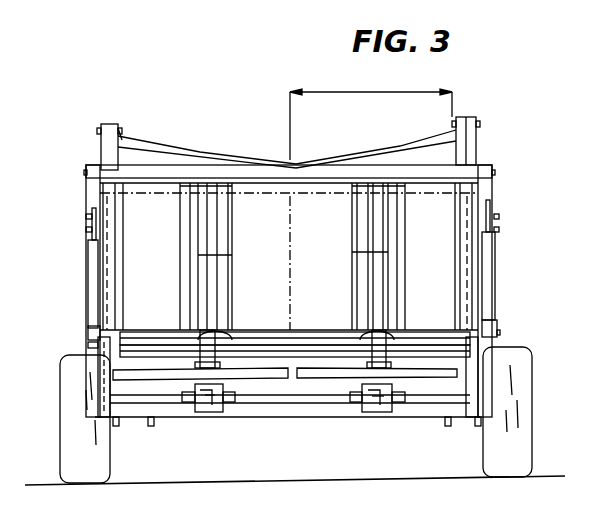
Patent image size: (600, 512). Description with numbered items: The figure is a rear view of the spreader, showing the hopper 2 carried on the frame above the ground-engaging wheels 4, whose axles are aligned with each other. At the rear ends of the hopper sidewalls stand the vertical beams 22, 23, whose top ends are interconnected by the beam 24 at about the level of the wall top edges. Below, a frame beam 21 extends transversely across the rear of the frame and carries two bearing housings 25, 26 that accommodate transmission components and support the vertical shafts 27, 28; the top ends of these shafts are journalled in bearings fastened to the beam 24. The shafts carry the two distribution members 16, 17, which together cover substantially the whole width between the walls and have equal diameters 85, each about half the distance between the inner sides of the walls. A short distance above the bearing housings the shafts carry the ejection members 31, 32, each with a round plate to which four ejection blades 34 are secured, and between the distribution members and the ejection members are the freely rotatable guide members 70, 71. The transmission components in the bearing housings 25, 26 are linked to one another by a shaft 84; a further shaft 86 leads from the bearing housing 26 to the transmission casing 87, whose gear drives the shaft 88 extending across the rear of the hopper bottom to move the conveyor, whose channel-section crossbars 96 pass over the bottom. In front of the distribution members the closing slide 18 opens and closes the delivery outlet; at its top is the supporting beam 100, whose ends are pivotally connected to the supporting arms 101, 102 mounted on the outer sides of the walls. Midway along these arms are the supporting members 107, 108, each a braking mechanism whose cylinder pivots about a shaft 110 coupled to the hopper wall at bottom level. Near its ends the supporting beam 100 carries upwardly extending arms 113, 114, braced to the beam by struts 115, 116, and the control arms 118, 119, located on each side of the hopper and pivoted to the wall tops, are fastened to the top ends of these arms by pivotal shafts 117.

The hopper 2 is at (500, 232).
The wheels 4 is at (64, 372).
The distribution member 16 is at (315, 262).
The distribution member 17 is at (280, 250).
The closing slide 18 is at (254, 205).
The frame beam 21 is at (318, 408).
The vertical beam 22 is at (462, 224).
The vertical beam 23 is at (115, 288).
The beam 24 is at (164, 188).
The bearing housing 25 is at (380, 414).
The bearing housing 26 is at (205, 414).
The vertical shaft 27 is at (378, 279).
The vertical shaft 28 is at (178, 352).
The ejection member 31 is at (428, 378).
The ejection member 32 is at (256, 382).
The ejection blades 34 is at (318, 346).
The guide member 70 is at (400, 332).
The guide member 71 is at (260, 346).
The shaft 84 is at (284, 388).
The diameter 85 is at (372, 95).
The shaft 86 is at (168, 420).
The transmission casing 87 is at (100, 380).
The shaft 88 is at (160, 345).
The crossbars 96 is at (220, 350).
The supporting beam 100 is at (240, 176).
The supporting arm 101 is at (490, 182).
The supporting arm 102 is at (88, 180).
The supporting member 107 is at (498, 272).
The supporting member 108 is at (87, 262).
The shaft 110 is at (98, 340).
The arm 113 is at (462, 116).
The arm 114 is at (121, 126).
The strut 115 is at (170, 146).
The strut 116 is at (398, 142).
The pivotal shafts 117 is at (97, 126).
The control arm 118 is at (477, 140).
The control arm 119 is at (110, 124).